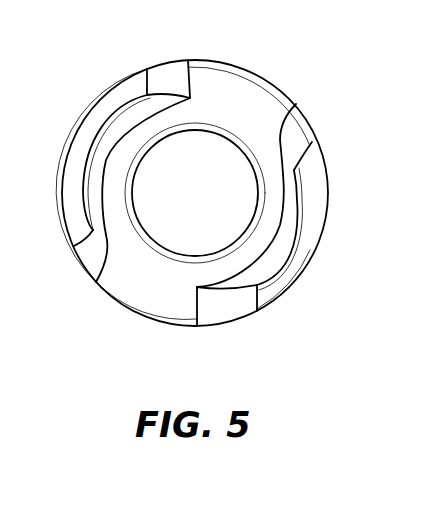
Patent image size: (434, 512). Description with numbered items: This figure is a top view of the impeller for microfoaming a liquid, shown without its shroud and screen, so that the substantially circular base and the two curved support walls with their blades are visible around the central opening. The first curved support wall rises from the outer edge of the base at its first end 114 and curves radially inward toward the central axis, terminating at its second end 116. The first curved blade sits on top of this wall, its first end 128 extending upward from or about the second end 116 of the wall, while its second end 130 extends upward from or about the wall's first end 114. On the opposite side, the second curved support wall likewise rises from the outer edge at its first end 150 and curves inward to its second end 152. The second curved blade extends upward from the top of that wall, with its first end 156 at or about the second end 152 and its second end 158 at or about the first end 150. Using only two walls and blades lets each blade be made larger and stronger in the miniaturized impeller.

The second end of first curved blade 130 is at (295, 105).
The first end of second curved blade 156 is at (196, 61).
The first end of first curved blade 128 is at (197, 326).
The second end of second curved support wall 152 is at (145, 78).
The first end of second curved support wall 150 is at (74, 246).
The second end of second curved blade 158 is at (84, 252).
The first end of first curved support wall 114 is at (313, 142).
The second end of first curved support wall 116 is at (257, 311).